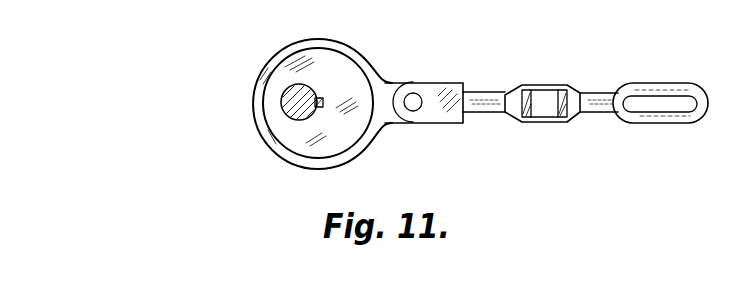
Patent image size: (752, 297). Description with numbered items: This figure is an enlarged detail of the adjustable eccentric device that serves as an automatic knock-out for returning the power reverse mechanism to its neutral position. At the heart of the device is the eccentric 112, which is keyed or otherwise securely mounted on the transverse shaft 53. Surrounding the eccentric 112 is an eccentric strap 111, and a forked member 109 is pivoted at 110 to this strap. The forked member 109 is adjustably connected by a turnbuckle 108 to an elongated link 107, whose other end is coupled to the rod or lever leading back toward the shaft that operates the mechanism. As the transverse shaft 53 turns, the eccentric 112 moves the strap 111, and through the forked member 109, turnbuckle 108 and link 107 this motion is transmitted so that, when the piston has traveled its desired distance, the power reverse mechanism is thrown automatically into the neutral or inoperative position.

The transverse shaft 53 is at (281, 108).
The elongated link 107 is at (663, 124).
The turnbuckle 108 is at (540, 85).
The forked member 109 is at (432, 83).
The pivot 110 is at (413, 111).
The eccentric strap 111 is at (320, 41).
The eccentric 112 is at (297, 144).